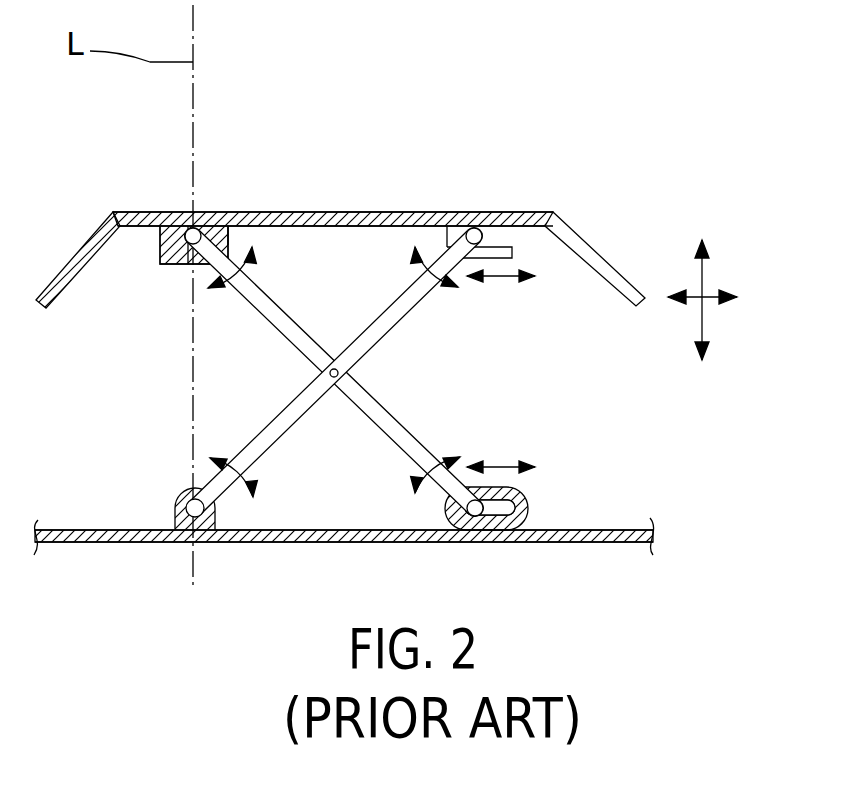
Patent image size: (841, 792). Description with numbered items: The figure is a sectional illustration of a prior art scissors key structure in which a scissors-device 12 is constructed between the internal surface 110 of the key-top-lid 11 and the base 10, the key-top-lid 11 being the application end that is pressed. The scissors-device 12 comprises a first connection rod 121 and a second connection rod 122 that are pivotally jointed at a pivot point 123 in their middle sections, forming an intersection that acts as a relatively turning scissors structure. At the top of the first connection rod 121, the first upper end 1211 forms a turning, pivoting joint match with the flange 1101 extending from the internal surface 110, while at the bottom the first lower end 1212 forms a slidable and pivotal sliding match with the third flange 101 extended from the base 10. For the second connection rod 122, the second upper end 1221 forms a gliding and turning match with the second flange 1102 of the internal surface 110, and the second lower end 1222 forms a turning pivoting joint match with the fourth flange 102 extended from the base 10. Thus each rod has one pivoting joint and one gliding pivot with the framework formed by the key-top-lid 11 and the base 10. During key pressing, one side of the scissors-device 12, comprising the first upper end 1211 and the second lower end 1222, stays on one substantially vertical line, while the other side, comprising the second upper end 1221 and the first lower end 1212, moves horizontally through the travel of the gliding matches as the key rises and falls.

The base 10 is at (280, 542).
The key-top-lid 11 is at (490, 212).
The internal surface 110 is at (338, 227).
The flange 1101 is at (163, 264).
The second flange 1102 is at (512, 258).
The scissors-device 12 is at (722, 358).
The first connection rod 121 is at (400, 435).
The second connection rod 122 is at (272, 432).
The pivot point 123 is at (330, 373).
The first upper end 1211 is at (178, 232).
The first lower end 1212 is at (467, 512).
The second upper end 1221 is at (555, 212).
The second lower end 1222 is at (167, 530).
The third flange 101 is at (528, 510).
The fourth flange 102 is at (175, 512).